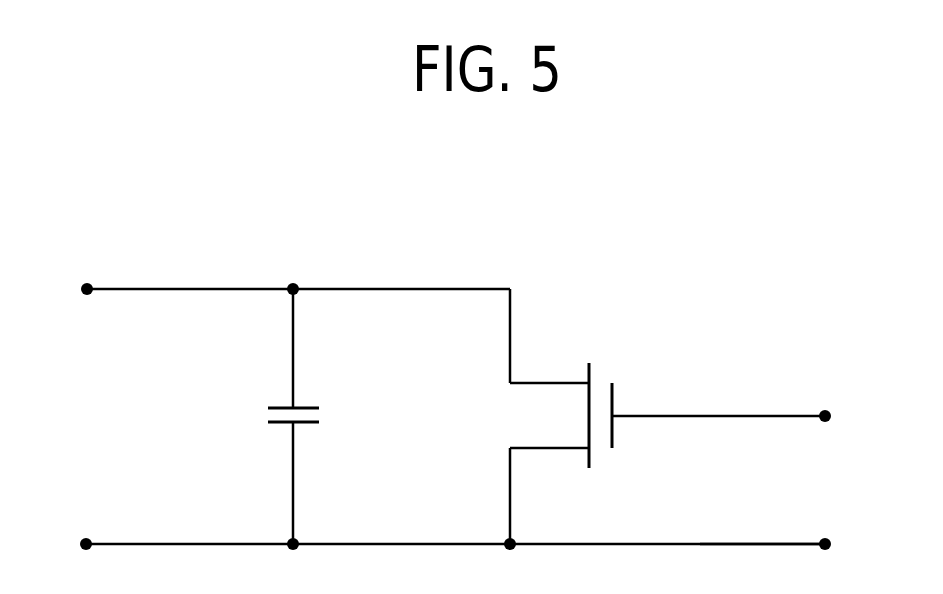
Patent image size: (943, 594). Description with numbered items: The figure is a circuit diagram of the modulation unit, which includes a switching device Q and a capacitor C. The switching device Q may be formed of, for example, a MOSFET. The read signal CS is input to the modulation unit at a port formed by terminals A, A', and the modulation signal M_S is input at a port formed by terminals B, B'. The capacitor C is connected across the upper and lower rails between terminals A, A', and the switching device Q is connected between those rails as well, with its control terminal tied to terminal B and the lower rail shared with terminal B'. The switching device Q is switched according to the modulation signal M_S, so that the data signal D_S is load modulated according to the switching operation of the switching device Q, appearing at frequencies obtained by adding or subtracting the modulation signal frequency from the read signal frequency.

The port A-A' terminal A is at (163, 290).
The port A-A' terminal A' is at (160, 544).
The port B-B' terminal B is at (741, 416).
The port B-B' terminal B' is at (788, 544).
The capacitor C is at (313, 416).
The switching device Q is at (613, 397).